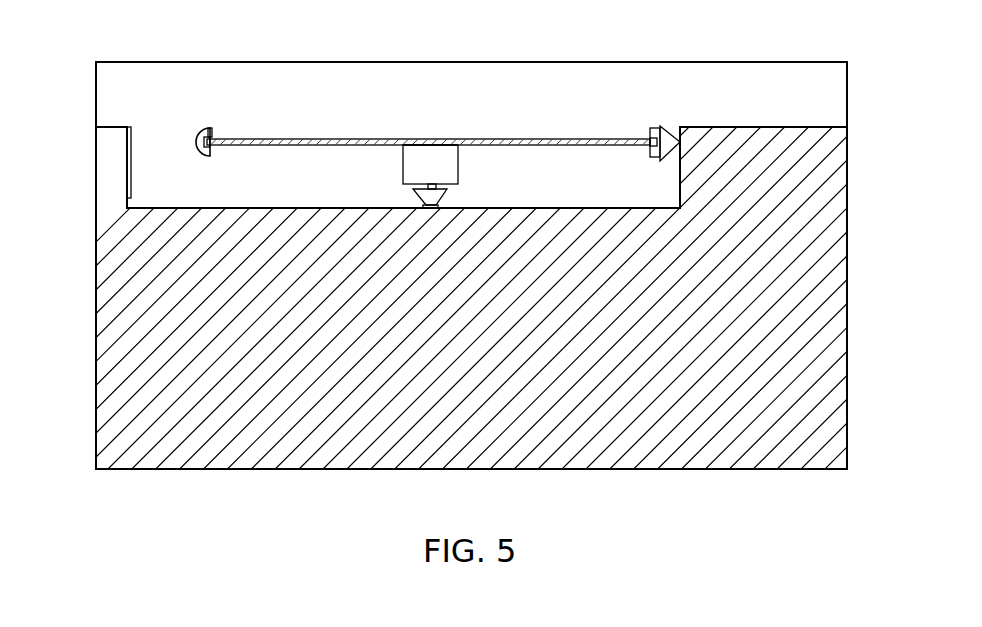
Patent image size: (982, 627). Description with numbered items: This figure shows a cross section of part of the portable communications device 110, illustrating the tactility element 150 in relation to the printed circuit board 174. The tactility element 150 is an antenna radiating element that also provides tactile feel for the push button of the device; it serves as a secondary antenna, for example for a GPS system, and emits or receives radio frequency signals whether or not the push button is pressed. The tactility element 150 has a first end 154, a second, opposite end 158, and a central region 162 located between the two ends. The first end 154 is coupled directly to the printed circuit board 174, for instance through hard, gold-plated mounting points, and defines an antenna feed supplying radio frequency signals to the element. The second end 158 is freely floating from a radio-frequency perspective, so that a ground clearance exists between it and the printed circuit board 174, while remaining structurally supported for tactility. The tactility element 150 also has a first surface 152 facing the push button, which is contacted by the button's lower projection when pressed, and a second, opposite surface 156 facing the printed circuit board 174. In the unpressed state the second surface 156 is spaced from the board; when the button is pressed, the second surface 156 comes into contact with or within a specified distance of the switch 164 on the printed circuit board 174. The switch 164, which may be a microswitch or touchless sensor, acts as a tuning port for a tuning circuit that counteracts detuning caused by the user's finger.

The portable communications device 110 is at (120, 35).
The tactility element 150 is at (347, 139).
The first surface 152 is at (403, 139).
The first end 154 is at (673, 138).
The second surface 156 is at (300, 146).
The second end 158 is at (205, 127).
The central region 162 is at (450, 139).
The switch 164 is at (416, 172).
The printed circuit board 174 is at (112, 304).